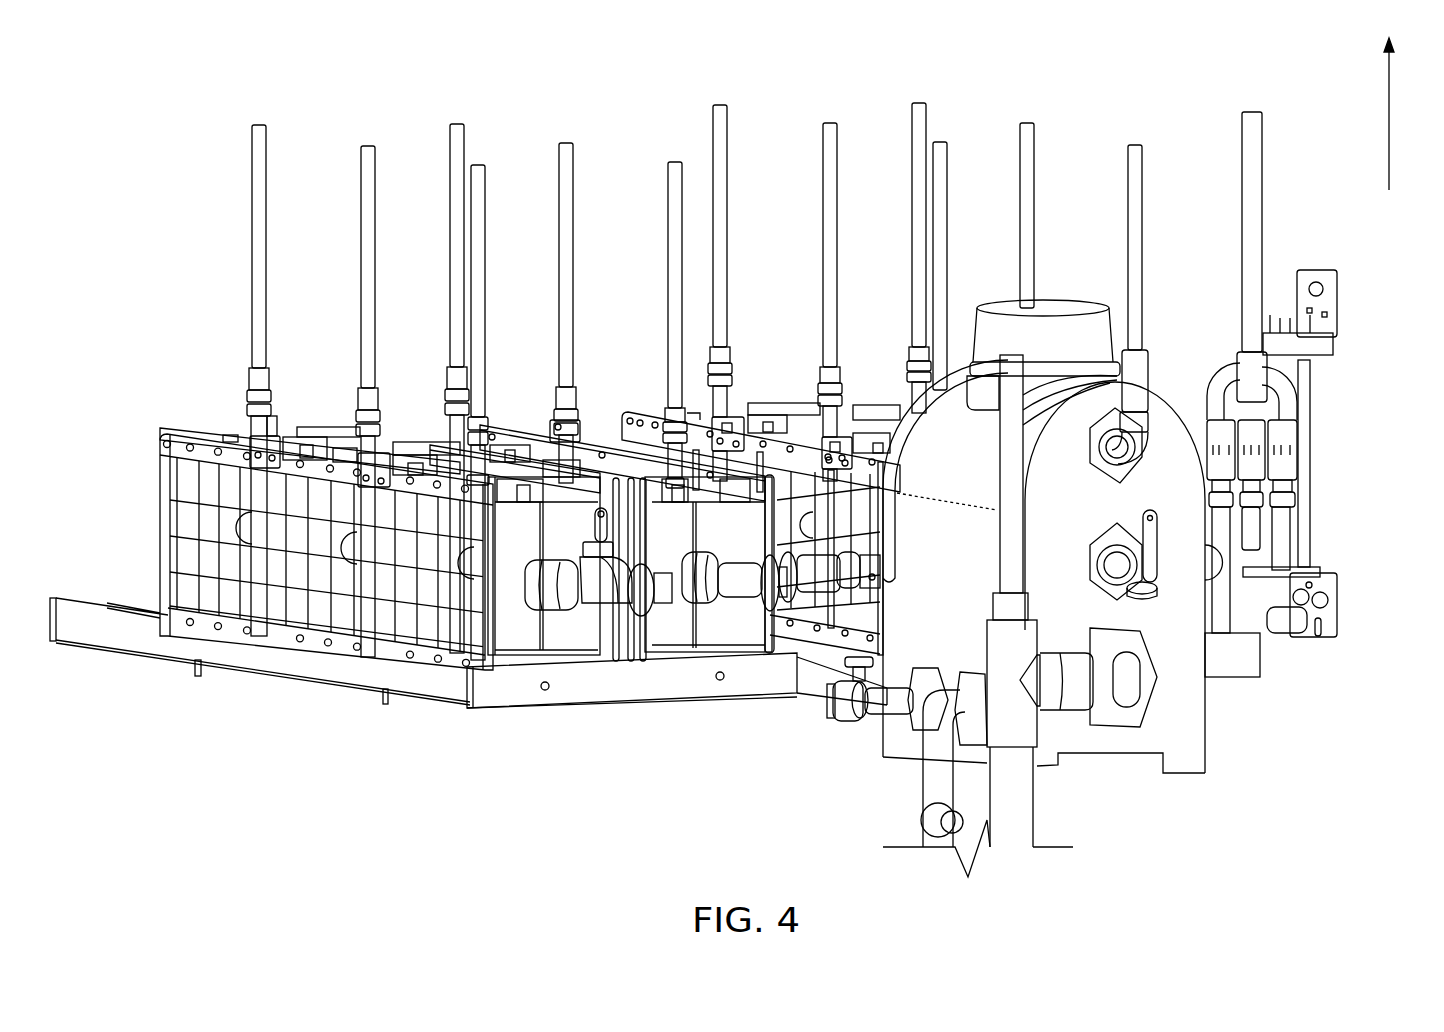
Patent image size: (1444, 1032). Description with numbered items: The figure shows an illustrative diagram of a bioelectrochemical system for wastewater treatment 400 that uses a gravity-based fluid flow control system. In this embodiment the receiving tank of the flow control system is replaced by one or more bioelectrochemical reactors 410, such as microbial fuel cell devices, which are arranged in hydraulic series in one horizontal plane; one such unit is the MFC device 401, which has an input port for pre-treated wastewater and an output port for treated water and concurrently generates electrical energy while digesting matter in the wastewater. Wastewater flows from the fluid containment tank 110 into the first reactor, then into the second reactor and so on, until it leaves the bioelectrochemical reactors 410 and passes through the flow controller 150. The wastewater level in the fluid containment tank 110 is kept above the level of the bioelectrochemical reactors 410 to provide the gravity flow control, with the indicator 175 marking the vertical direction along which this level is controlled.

The bioelectrochemical system for wastewater treatment 400 is at (211, 52).
The bioelectrochemical reactors 410 is at (408, 616).
The MFC device 401 is at (677, 610).
The fluid containment tank 110 is at (1183, 752).
The flow controller 150 is at (1303, 443).
The flow direction indicator 175 is at (1386, 115).